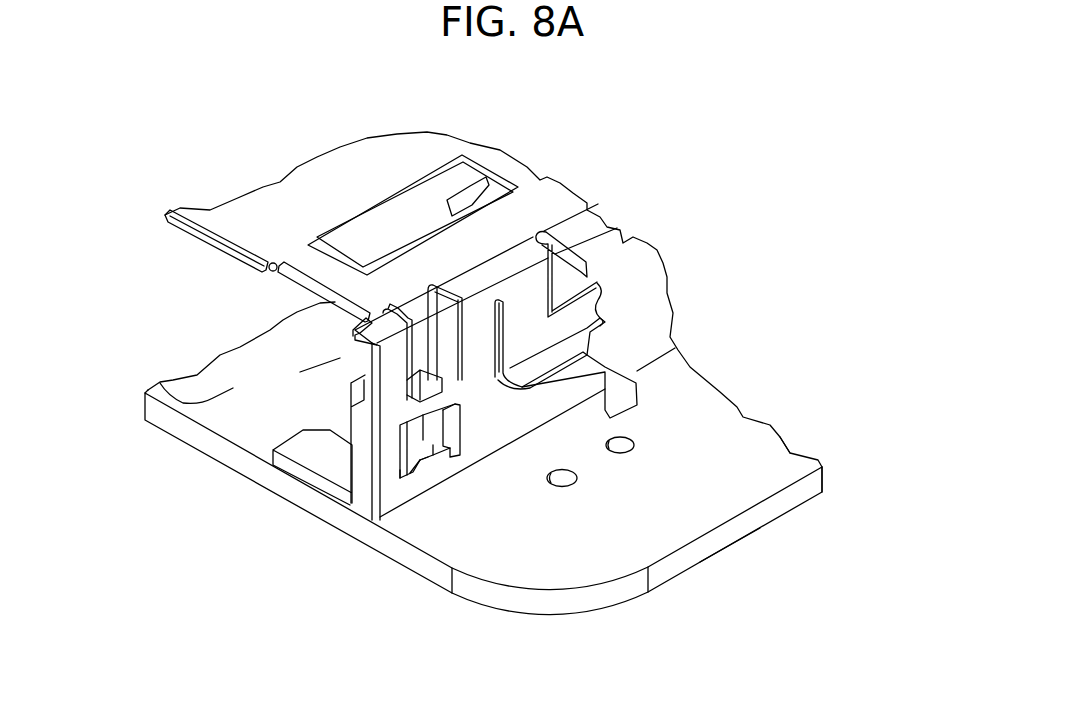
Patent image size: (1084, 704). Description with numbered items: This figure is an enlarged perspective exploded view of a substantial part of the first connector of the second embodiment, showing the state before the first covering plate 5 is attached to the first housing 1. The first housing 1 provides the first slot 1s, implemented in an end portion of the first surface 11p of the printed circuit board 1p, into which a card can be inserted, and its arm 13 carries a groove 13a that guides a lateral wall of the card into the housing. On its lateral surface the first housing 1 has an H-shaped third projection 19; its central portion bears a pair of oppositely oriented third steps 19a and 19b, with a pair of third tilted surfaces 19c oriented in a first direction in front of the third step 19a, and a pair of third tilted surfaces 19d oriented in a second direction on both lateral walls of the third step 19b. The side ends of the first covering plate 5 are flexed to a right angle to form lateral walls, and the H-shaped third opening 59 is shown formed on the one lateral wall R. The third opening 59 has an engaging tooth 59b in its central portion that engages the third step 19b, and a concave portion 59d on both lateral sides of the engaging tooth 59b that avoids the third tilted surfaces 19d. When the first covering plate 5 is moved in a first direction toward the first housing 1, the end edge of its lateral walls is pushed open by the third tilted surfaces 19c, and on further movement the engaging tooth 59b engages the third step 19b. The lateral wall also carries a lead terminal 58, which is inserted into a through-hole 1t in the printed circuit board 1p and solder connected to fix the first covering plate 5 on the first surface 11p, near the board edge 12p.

The first housing 1 is at (665, 250).
The printed circuit board 1p is at (825, 483).
The first slot 1s is at (158, 382).
The through-hole 1t is at (575, 487).
The first covering plate 5 is at (200, 245).
The first surface 11p is at (763, 460).
The edge of plate portion 12p is at (762, 532).
The arm 13 is at (659, 314).
The groove 13a is at (313, 460).
The third projection 19 is at (412, 472).
The third step 19a is at (453, 410).
The third step 19b is at (428, 457).
The third tilted surface 19c is at (402, 477).
The third tilted surface 19d is at (412, 472).
The lead terminal 58 is at (628, 388).
The third opening 59 is at (455, 345).
The engaging tooth 59b is at (431, 370).
The concave portion 59d is at (414, 358).
The lateral wall R is at (387, 372).